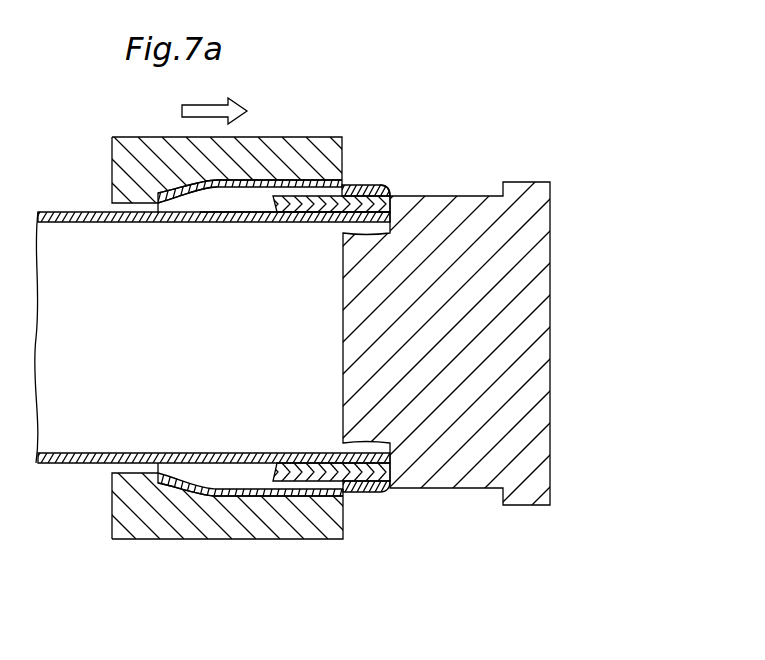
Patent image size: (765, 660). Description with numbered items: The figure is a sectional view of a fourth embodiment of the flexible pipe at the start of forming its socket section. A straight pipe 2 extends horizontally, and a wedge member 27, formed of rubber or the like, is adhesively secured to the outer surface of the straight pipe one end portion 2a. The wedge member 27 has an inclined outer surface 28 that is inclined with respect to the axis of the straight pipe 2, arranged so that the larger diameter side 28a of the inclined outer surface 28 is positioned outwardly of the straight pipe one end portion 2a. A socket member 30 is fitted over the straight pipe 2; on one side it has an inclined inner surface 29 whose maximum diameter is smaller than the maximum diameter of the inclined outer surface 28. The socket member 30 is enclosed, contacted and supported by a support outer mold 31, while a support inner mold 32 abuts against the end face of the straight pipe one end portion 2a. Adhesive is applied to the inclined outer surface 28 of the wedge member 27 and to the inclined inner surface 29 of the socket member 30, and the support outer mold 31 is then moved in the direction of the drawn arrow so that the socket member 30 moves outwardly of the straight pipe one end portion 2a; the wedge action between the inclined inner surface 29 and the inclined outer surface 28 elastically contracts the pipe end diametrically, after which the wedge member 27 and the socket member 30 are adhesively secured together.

The straight pipe 2 is at (60, 212).
The straight pipe one end portion 2a is at (298, 222).
The wedge member 27 is at (324, 207).
The inclined outer surface 28 is at (357, 177).
The larger diameter side 28a is at (385, 185).
The inclined inner surface 29 is at (191, 211).
The socket member 30 is at (268, 183).
The support outer mold 31 is at (148, 148).
The support inner mold 32 is at (535, 308).